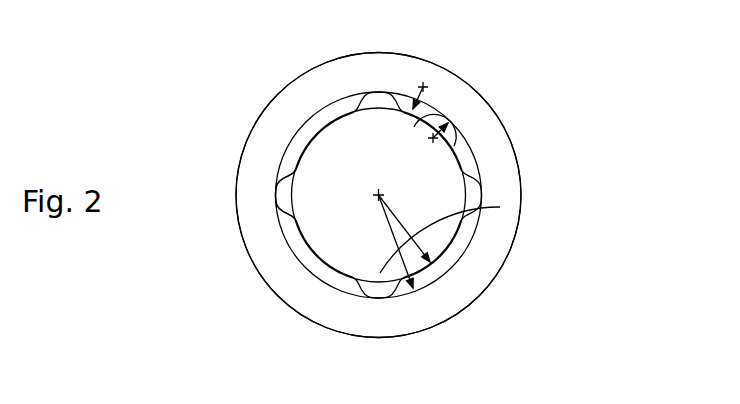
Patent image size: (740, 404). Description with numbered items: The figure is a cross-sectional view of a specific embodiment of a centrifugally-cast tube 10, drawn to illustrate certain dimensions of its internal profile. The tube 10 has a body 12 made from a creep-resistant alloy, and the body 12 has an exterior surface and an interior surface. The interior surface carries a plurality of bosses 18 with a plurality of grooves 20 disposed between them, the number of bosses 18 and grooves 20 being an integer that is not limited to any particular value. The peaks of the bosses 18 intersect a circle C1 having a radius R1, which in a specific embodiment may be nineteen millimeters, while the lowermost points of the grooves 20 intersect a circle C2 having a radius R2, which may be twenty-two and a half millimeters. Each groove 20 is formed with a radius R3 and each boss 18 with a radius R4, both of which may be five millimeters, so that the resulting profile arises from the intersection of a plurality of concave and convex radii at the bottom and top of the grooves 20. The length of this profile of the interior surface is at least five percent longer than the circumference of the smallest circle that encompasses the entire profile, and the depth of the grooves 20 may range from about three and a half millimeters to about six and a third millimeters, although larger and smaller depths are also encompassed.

The centrifugally-cast tube 10 is at (576, 127).
The body 12 is at (457, 297).
The bosses 18 is at (342, 112).
The grooves 20 is at (276, 196).
The circle C1 is at (313, 257).
The circle C2 is at (336, 288).
The radius R1 is at (500, 207).
The radius R2 is at (378, 200).
The radius R3 is at (480, 174).
The radius R4 is at (410, 102).